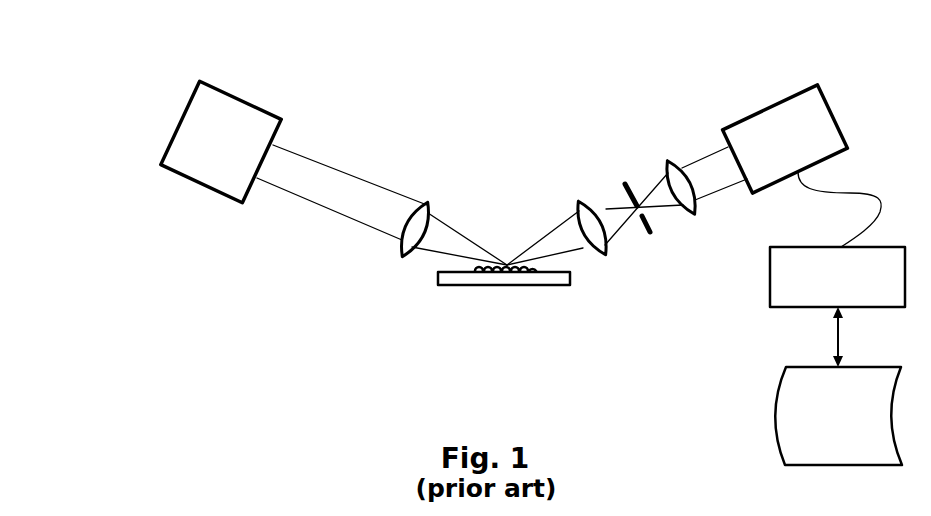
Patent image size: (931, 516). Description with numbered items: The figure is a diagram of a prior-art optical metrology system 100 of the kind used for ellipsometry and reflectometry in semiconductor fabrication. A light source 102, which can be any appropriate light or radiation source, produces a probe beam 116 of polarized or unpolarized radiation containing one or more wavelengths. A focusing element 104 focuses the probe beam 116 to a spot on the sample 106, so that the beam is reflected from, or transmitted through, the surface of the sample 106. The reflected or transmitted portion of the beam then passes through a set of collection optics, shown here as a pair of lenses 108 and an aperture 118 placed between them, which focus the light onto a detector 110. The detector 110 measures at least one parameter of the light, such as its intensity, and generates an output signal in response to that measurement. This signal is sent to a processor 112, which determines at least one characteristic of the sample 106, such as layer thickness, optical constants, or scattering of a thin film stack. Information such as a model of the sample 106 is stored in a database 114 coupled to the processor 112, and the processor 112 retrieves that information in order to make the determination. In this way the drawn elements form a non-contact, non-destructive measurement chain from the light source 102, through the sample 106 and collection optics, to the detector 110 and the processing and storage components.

The optical inspection system 100 is at (12, 56).
The light source 102 is at (221, 141).
The focusing element 104 is at (402, 256).
The sample 106 is at (500, 285).
The lenses 108 is at (607, 243).
The detector 110 is at (785, 139).
The processor 112 is at (837, 239).
The database 114 is at (838, 386).
The probe beam 116 is at (334, 192).
The aperture 118 is at (628, 185).